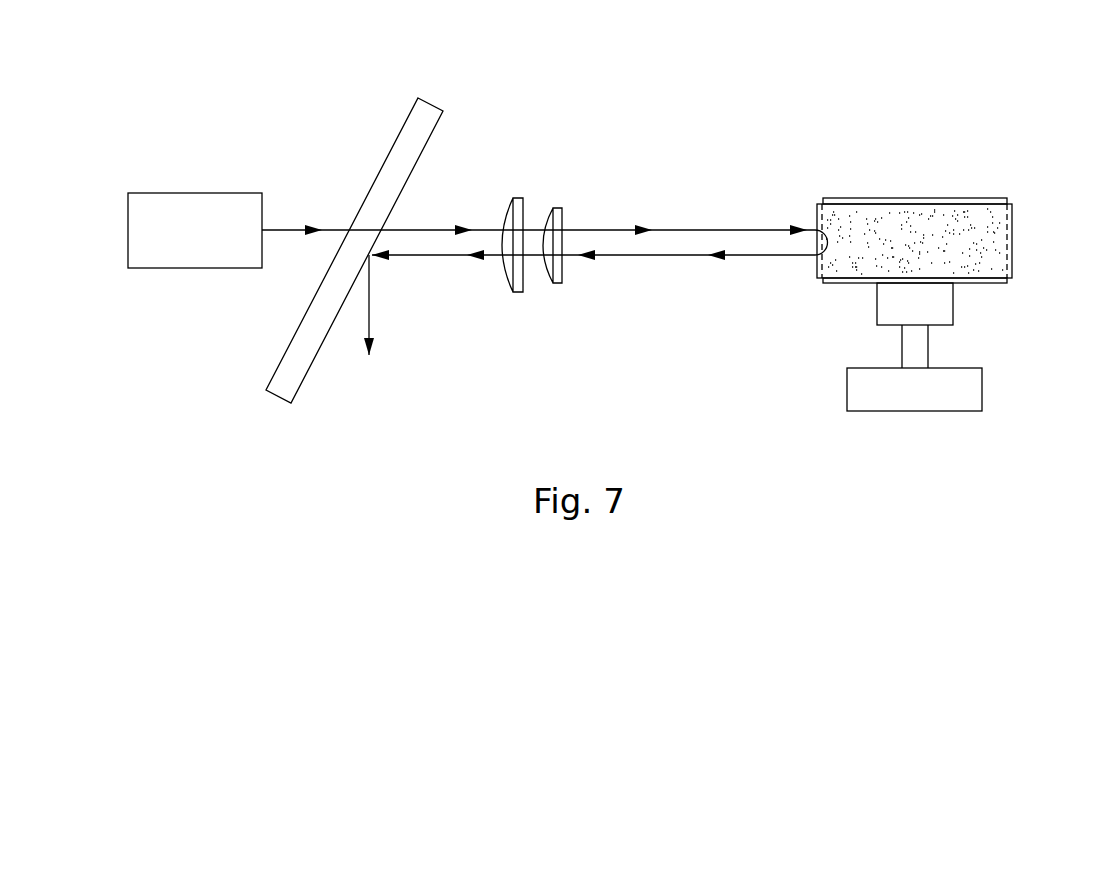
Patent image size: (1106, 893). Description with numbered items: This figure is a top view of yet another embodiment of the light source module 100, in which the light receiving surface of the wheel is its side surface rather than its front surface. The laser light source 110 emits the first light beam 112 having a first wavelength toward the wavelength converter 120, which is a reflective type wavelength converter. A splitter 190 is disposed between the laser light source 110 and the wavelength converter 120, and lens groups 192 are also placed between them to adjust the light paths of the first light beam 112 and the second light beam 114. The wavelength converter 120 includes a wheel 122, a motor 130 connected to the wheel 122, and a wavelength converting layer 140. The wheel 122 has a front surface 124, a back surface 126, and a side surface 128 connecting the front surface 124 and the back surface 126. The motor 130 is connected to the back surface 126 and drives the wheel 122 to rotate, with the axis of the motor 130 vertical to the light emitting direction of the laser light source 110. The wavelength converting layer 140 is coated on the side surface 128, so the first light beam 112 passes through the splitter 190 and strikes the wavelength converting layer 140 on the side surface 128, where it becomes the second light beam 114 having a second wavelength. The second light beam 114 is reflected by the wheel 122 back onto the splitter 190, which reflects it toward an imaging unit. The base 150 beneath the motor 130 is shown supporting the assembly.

The light source module 100 is at (148, 80).
The laser light source 110 is at (197, 193).
The first light beam 112 is at (590, 228).
The second light beam 114 is at (665, 257).
The wavelength converter 120 is at (925, 224).
The wheel 122 is at (940, 198).
The front surface 124 is at (995, 198).
The back surface 126 is at (998, 285).
The side surface 128 is at (820, 227).
The motor 130 is at (890, 302).
The wavelength converting layer 140 is at (857, 227).
The base / stage 150 is at (982, 388).
The splitter 190 is at (432, 100).
The lens groups 192 is at (520, 198).